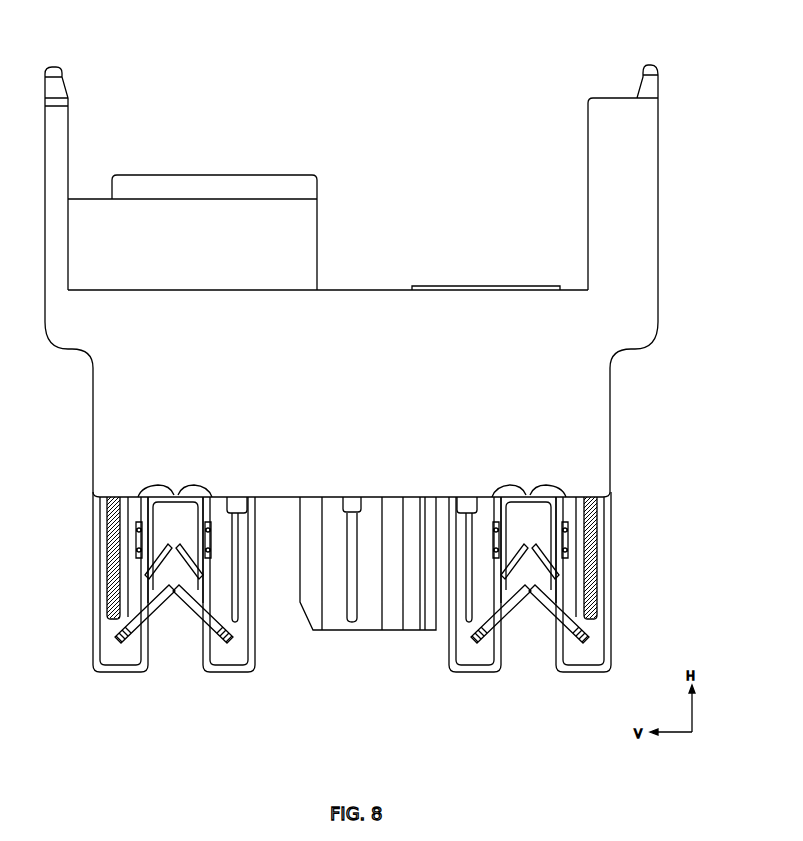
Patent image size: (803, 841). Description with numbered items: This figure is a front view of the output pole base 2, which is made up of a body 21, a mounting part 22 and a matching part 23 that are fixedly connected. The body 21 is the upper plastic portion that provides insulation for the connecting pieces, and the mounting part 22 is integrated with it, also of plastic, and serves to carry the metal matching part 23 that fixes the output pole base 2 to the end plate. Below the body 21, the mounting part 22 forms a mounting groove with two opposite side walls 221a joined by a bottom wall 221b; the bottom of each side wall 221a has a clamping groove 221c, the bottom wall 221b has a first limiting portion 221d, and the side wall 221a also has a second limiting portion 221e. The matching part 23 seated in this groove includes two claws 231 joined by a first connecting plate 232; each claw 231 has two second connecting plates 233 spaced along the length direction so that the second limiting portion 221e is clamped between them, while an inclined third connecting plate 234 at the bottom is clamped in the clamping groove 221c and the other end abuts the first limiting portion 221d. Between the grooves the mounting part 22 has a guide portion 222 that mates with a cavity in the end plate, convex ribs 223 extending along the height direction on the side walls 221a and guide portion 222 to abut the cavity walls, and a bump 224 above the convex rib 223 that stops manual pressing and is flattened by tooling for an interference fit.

The output pole base 2 is at (97, 43).
The body 21 is at (389, 288).
The mounting part 22 is at (93, 580).
The matching part 23 is at (178, 684).
The side wall 221a is at (478, 672).
The bottom wall 221b is at (504, 496).
The clamping groove 221c is at (498, 652).
The first limiting portion 221d is at (528, 496).
The second limiting portion 221e is at (500, 547).
The guide portion 222 is at (390, 632).
The convex rib 223 is at (353, 622).
The bump 224 is at (352, 498).
The claw 231 is at (160, 545).
The first connecting plate 232 is at (176, 495).
The second connecting plate 233 is at (212, 496).
The third connecting plate 234 is at (147, 644).